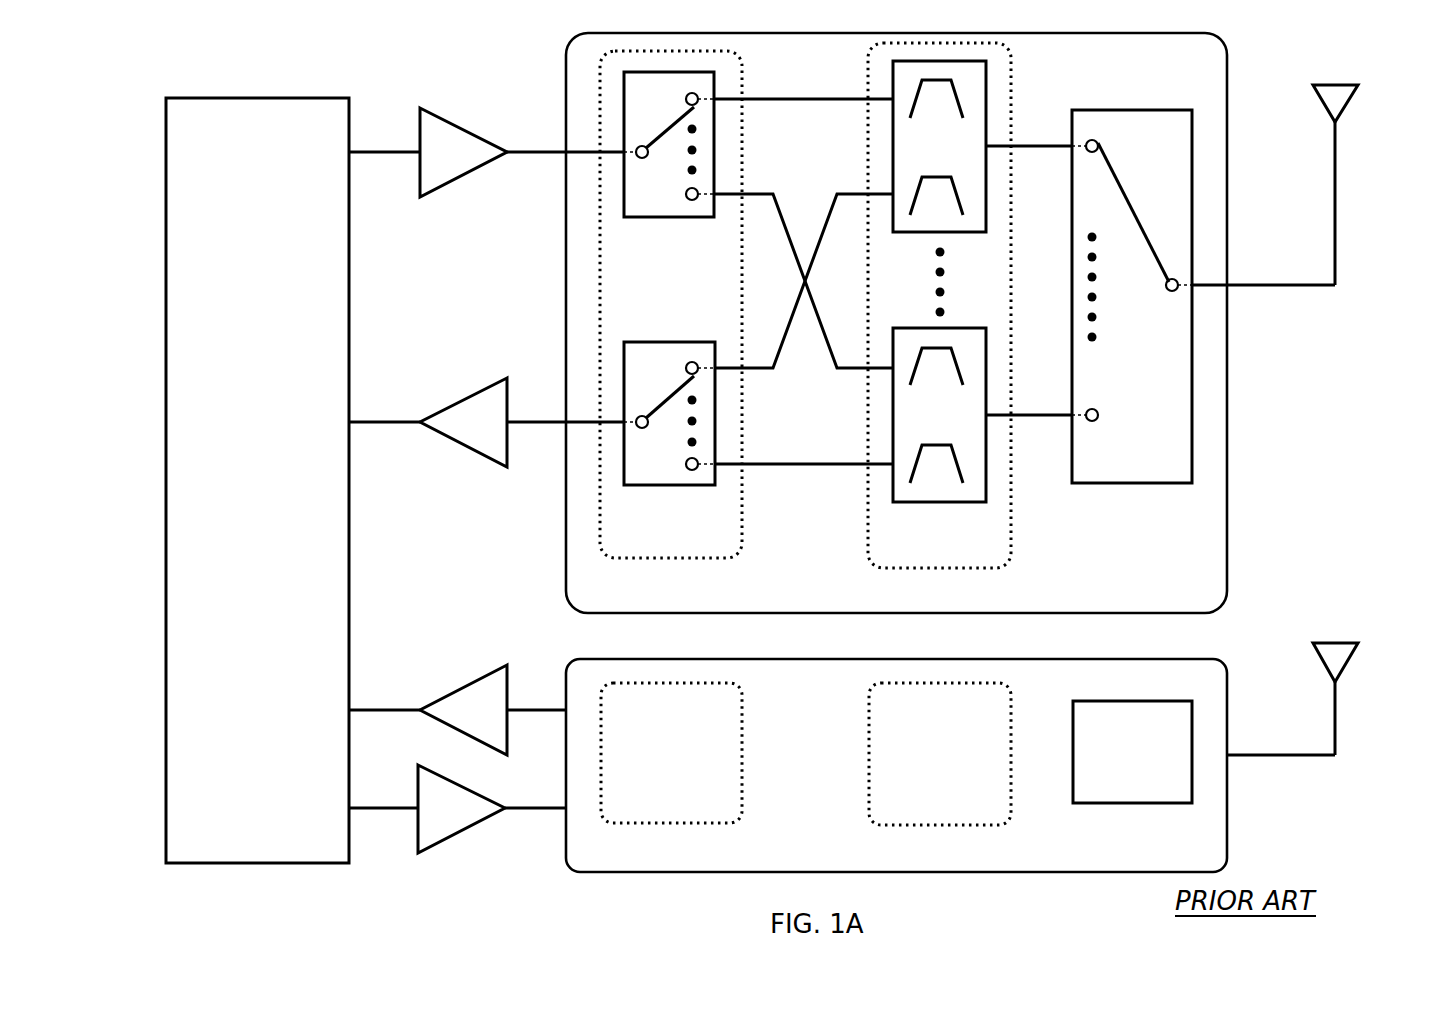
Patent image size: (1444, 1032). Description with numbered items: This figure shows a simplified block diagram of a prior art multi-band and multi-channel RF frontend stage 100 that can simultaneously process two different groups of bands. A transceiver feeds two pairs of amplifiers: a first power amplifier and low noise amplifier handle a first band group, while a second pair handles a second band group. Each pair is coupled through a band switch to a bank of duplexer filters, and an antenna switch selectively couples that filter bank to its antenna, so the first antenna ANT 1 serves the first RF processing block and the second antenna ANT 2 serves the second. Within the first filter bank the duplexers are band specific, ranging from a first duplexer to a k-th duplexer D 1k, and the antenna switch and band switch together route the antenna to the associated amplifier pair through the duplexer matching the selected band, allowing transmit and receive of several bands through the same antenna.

The RF frontend stage 100 is at (158, 39).
The first antenna ANT1 1 is at (1367, 185).
The second antenna ANT2 2 is at (1367, 699).
The k-th duplexer D1k of band group 1 1k is at (939, 415).